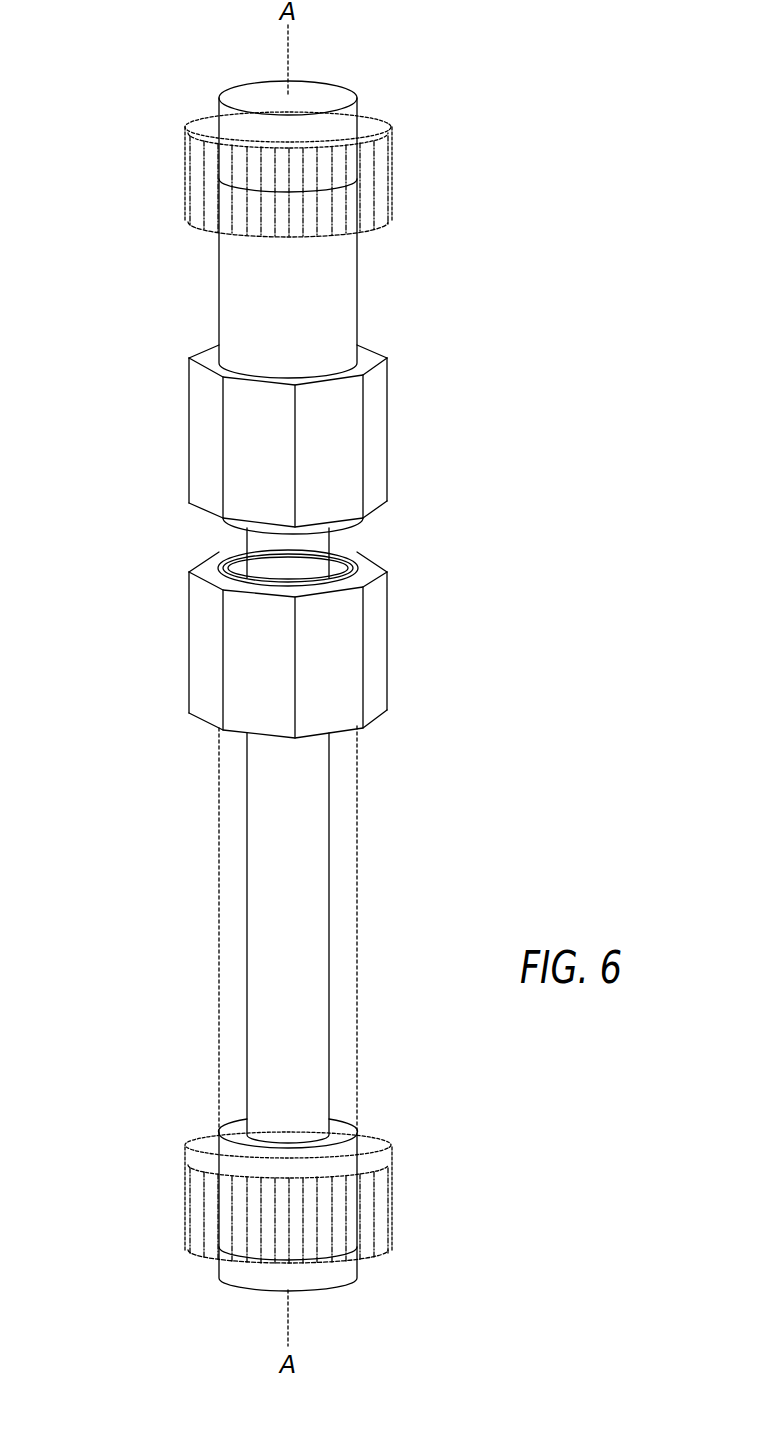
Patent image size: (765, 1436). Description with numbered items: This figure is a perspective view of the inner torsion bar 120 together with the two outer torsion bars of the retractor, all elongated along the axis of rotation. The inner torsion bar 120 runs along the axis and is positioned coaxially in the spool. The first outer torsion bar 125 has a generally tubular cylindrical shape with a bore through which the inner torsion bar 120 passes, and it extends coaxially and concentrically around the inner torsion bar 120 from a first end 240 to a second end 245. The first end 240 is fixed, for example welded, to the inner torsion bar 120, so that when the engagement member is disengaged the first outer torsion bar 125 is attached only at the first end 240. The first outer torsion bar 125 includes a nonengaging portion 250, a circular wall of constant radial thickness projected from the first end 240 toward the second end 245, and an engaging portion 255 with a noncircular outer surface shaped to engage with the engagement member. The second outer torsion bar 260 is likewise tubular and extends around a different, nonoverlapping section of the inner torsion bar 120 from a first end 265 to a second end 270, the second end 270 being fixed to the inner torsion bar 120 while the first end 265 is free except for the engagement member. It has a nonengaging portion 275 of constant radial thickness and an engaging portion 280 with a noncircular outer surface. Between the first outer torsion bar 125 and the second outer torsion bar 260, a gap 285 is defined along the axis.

The inner torsion bar 120 is at (331, 541).
The first outer torsion bar 125 is at (357, 855).
The first end 240 is at (332, 1147).
The second end 245 is at (372, 558).
The nonengaging portion 250 is at (219, 818).
The engaging portion 255 is at (189, 618).
The second outer torsion bar 260 is at (358, 279).
The first end 265 is at (377, 510).
The second end 270 is at (308, 192).
The nonengaging portion 275 is at (218, 283).
The engaging portion 280 is at (189, 395).
The gap 285 is at (200, 530).